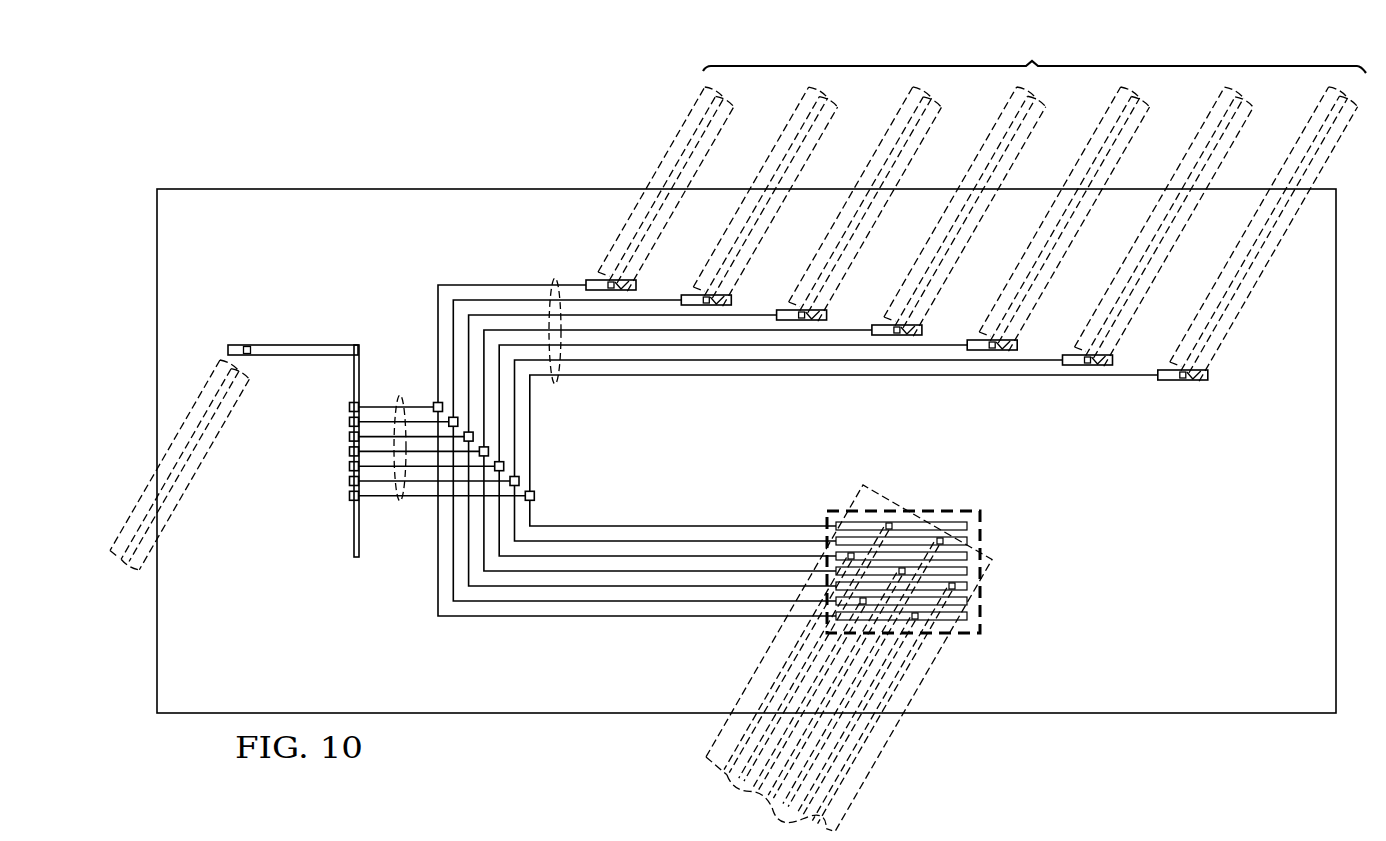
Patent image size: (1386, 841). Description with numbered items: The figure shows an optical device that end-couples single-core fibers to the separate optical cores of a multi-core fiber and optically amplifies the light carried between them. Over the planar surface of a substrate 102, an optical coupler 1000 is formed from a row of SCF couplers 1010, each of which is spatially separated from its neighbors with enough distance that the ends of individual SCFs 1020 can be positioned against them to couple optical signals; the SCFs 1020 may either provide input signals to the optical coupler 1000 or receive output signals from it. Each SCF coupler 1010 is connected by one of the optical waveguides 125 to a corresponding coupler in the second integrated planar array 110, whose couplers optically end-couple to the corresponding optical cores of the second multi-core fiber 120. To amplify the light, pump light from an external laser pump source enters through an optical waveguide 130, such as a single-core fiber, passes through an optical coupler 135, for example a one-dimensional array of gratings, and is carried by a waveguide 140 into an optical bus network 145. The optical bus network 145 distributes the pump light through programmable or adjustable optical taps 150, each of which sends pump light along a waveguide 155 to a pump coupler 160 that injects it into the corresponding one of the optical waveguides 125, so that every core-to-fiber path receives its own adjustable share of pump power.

The substrate 102 is at (1145, 586).
The second integrated planar array 110 is at (949, 509).
The second multi-core fiber 120 is at (887, 746).
The optical waveguides 125 is at (553, 278).
The optical waveguide 130 is at (188, 476).
The optical coupler 135 is at (246, 346).
The waveguide 140 is at (311, 341).
The optical bus network 145 is at (353, 533).
The programmable optical taps 150 is at (347, 406).
The waveguide 155 is at (399, 503).
The pump coupler 160 is at (436, 399).
The optical coupler 1000 is at (438, 133).
The SCF couplers 1010 is at (1203, 382).
The single-core fibers 1020 is at (981, 208).